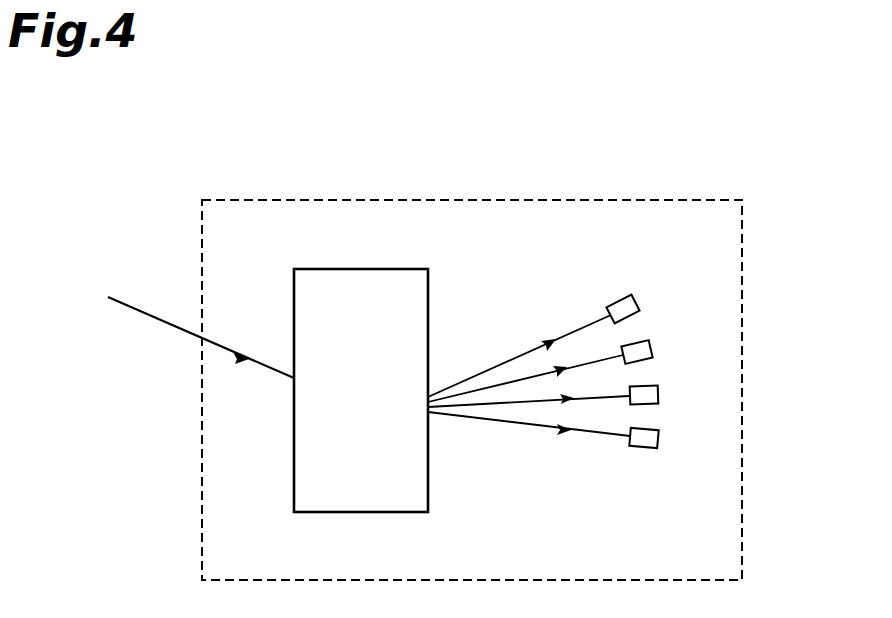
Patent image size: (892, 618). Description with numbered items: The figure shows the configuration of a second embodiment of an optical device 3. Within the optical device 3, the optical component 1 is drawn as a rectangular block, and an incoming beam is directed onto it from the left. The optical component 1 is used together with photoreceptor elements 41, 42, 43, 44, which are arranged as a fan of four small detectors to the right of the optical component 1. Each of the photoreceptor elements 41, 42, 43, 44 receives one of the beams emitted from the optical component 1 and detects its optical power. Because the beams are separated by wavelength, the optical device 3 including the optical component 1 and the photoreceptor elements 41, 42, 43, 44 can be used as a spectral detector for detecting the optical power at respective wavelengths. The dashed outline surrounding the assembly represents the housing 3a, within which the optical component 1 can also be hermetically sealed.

The optical device 3 is at (473, 169).
The housing 3a is at (743, 300).
The optical component 1 is at (368, 288).
The photoreceptor element 41 is at (650, 300).
The photoreceptor element 42 is at (652, 350).
The photoreceptor element 43 is at (659, 397).
The photoreceptor element 44 is at (658, 444).